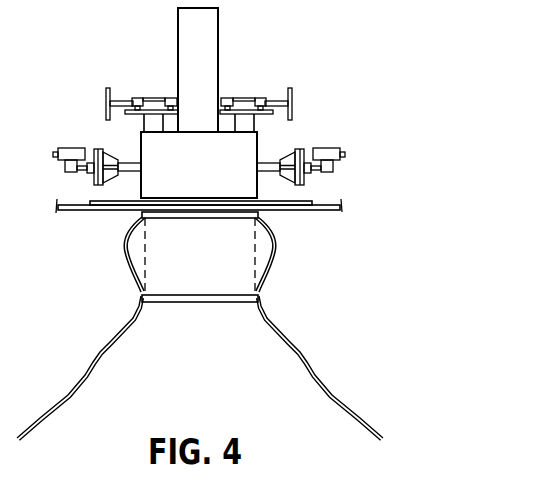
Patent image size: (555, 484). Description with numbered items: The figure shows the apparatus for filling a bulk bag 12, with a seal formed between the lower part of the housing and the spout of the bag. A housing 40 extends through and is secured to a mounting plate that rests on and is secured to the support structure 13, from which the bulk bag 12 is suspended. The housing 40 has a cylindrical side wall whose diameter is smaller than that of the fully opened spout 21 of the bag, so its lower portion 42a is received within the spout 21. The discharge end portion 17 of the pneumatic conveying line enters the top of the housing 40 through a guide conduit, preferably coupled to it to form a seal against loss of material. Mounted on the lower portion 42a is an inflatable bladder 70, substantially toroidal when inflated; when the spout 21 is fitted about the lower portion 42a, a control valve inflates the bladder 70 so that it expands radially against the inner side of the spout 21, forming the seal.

The bulk bag 12 is at (80, 368).
The support structure 13 is at (326, 213).
The discharge end portion 17 is at (219, 53).
The spout 21 is at (277, 253).
The housing 40 is at (262, 143).
The lower portion 42a is at (118, 255).
The inflatable bladder 70 is at (167, 271).